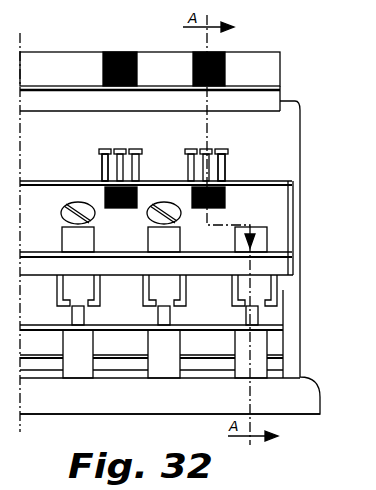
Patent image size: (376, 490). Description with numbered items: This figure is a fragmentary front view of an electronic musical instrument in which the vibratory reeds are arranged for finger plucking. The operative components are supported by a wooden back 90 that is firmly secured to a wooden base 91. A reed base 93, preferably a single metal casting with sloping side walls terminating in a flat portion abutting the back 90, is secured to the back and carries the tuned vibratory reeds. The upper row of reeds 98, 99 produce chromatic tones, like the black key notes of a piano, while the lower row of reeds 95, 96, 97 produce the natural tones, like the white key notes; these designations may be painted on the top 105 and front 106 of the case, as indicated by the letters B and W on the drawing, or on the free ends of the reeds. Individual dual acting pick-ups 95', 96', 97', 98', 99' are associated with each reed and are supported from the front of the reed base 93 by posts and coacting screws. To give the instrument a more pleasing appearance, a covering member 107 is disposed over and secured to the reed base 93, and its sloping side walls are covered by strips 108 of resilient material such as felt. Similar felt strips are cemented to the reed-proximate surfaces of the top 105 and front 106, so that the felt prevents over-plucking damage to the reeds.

The back 90 is at (297, 101).
The base 91 is at (62, 390).
The reed base 93 is at (285, 289).
The tuned vibratory reed 95 is at (288, 309).
The dual acting pick-up 95' is at (237, 290).
The tuned vibratory reed 96 is at (136, 329).
The dual acting pick-up 96' is at (146, 290).
The tuned vibratory reed 97 is at (55, 329).
The dual acting pick-up 97' is at (63, 290).
The tuned vibratory reed 98 is at (212, 150).
The dual acting pick-up 98' is at (248, 162).
The tuned vibratory reed 99 is at (118, 150).
The dual acting pick-up 99' is at (80, 162).
The top of the case 105 is at (258, 63).
The front of the case 106 is at (262, 344).
The covering member 107 is at (275, 203).
The strips of resilient material 108 is at (275, 183).